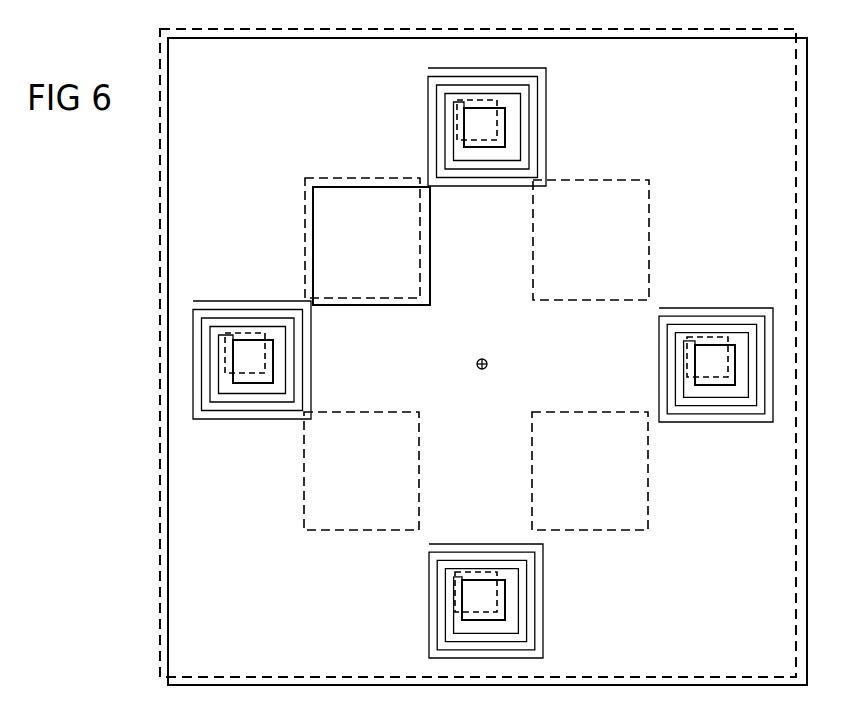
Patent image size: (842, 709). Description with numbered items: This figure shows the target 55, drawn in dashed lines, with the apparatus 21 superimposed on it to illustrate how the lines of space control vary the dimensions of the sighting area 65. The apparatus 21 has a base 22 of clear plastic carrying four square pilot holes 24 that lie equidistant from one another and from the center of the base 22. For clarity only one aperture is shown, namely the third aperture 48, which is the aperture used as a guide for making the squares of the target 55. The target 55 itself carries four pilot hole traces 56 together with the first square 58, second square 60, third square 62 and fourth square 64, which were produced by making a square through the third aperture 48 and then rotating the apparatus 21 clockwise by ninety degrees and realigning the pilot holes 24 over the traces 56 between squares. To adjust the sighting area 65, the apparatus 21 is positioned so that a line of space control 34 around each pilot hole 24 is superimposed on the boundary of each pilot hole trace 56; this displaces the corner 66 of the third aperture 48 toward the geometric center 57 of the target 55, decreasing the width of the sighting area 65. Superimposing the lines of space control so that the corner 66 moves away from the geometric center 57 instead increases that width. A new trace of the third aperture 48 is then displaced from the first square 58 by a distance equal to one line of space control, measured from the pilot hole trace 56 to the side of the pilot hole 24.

The apparatus 21 is at (170, 249).
The base 22 is at (232, 86).
The pilot holes 24 is at (497, 141).
The line of space control 34 is at (455, 120).
The third aperture 48 is at (430, 285).
The target 55 is at (159, 138).
The pilot hole traces 56 is at (480, 118).
The geometric center 57 is at (487, 368).
The first square 58 is at (333, 176).
The second square 60 is at (634, 180).
The third square 62 is at (565, 412).
The fourth square 64 is at (335, 411).
The sighting area 65 is at (448, 210).
The corner 66 is at (430, 305).